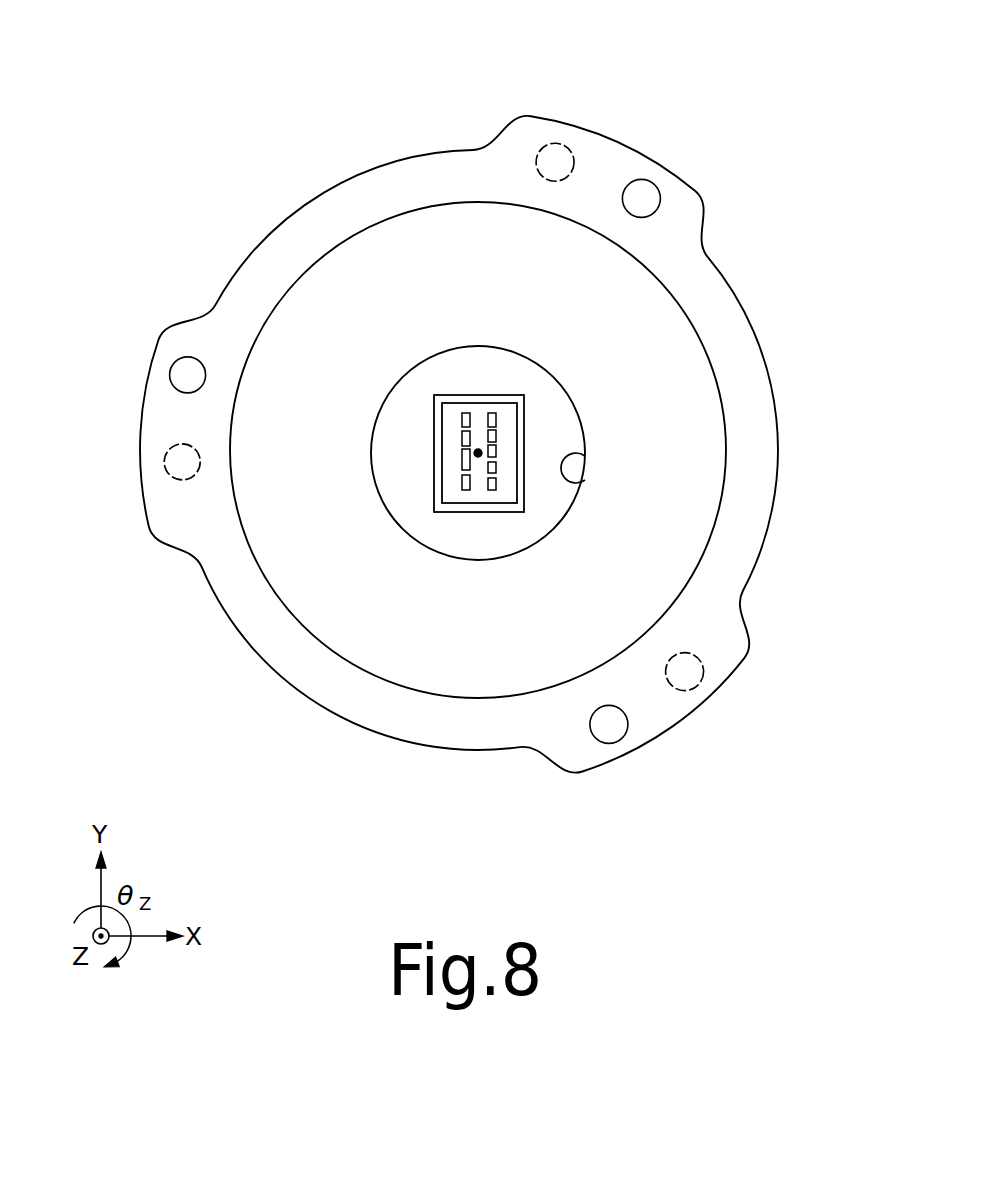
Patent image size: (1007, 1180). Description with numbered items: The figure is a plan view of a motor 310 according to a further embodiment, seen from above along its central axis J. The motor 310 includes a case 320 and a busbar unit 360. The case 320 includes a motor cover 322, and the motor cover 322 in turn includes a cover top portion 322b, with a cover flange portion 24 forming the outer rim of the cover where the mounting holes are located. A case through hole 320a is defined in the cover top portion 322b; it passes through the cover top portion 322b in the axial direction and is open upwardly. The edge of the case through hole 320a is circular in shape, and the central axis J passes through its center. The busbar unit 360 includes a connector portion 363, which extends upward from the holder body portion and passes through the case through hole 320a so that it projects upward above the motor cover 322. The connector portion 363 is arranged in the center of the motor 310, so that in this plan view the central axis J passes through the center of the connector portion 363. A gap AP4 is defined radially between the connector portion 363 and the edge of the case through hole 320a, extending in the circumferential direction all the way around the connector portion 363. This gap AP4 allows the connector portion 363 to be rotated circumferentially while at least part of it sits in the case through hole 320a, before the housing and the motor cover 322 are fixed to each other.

The motor 310 is at (481, 428).
The case 320 is at (419, 444).
The motor cover 322 is at (222, 652).
The case through hole 320a is at (573, 482).
The cover top portion 322b is at (413, 627).
The cover flange portion 24 is at (552, 522).
The connector portion 363 is at (668, 431).
The busbar unit 360 is at (524, 428).
The gap AP4 is at (490, 374).
The central axis J is at (478, 453).